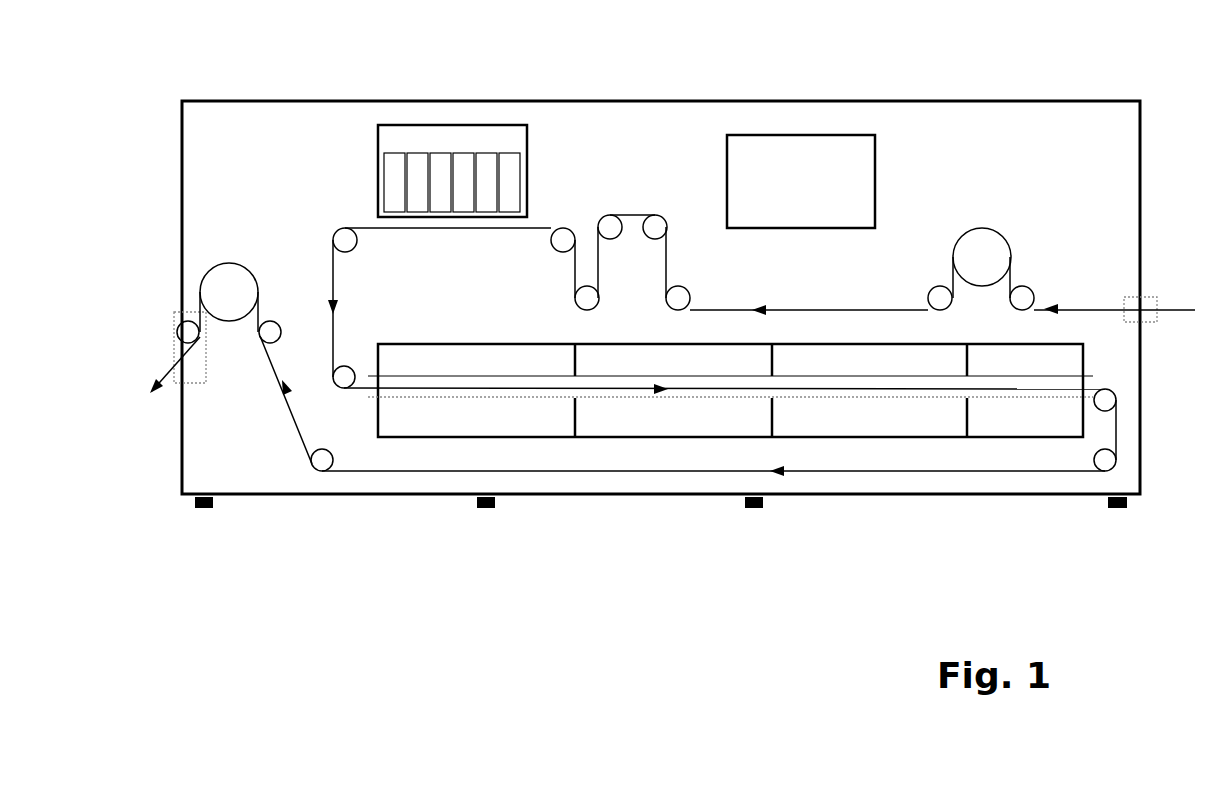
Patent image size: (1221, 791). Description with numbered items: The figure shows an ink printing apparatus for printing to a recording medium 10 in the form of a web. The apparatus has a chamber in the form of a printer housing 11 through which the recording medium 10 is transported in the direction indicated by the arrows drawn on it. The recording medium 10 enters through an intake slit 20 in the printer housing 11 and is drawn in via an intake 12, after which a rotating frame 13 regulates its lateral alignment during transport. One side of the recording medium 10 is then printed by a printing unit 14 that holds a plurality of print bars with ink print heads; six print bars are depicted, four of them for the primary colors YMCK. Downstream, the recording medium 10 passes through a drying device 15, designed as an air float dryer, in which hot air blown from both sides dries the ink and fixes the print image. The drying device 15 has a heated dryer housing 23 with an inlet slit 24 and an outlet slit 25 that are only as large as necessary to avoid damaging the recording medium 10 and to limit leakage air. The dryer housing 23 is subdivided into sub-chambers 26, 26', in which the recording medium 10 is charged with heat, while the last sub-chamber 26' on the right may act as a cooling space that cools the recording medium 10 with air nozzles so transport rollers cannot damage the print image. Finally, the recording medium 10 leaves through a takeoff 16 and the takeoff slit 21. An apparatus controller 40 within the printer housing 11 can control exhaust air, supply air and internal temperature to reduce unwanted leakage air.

The recording medium 10 is at (1083, 308).
The printer housing 11 is at (695, 102).
The intake 12 is at (982, 228).
The rotating frame 13 is at (630, 200).
The printing unit 14 is at (465, 125).
The drying device 15 is at (616, 458).
The takeoff 16 is at (225, 262).
The intake slit 20 is at (1164, 291).
The takeoff slit 21 is at (165, 323).
The dryer housing 23 is at (472, 343).
The inlet slit 24 is at (362, 396).
The outlet slit 25 is at (1102, 379).
The sub-chamber 26 is at (688, 444).
The last sub-chamber 26' is at (1025, 442).
The apparatus controller 40 is at (877, 167).